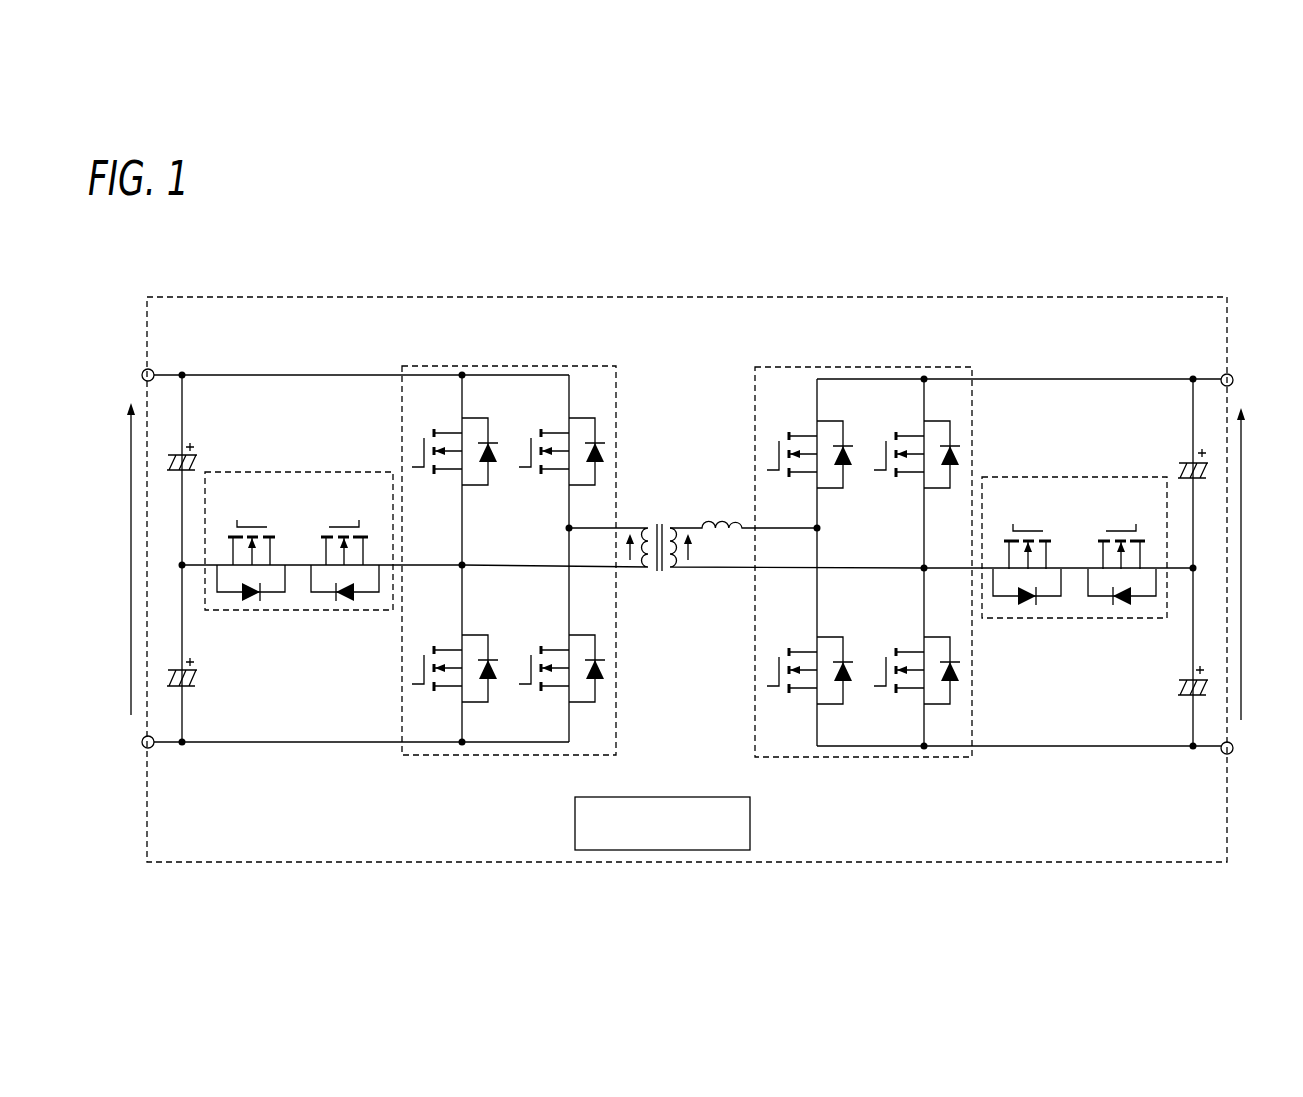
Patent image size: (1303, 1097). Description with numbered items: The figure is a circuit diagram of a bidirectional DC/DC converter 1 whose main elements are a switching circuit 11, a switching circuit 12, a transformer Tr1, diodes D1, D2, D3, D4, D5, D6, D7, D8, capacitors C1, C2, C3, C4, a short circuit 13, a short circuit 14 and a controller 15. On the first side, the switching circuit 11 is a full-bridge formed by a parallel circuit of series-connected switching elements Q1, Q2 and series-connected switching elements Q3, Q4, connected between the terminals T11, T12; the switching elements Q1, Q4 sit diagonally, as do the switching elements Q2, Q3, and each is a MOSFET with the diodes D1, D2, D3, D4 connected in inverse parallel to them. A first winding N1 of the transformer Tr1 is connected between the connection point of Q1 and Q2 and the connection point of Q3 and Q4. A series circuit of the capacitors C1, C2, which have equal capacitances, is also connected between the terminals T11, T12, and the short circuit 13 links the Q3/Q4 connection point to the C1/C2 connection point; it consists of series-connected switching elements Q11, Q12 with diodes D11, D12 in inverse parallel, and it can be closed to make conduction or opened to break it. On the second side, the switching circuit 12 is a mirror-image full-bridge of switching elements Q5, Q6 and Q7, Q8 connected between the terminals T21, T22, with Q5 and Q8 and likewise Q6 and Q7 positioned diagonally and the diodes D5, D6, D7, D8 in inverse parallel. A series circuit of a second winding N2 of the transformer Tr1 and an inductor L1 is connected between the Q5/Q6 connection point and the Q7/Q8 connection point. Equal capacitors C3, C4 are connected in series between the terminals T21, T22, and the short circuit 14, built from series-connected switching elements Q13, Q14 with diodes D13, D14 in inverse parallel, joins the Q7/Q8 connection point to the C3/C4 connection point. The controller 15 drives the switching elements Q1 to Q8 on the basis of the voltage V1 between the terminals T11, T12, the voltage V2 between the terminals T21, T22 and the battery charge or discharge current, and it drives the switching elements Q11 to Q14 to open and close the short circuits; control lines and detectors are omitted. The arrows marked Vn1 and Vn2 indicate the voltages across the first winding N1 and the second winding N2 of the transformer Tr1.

The bidirectional DC/DC converter 1 is at (200, 296).
The switching circuit 11 is at (493, 363).
The switching circuit 12 is at (868, 364).
The short circuit 13 is at (303, 470).
The short circuit 14 is at (1077, 475).
The controller 15 is at (752, 823).
The terminal T11 is at (329, 376).
The terminal T12 is at (329, 743).
The terminal T21 is at (1053, 380).
The terminal T22 is at (1053, 750).
The voltage V1 is at (119, 559).
The voltage V2 is at (1259, 564).
The capacitor C1 is at (190, 445).
The capacitor C2 is at (201, 679).
The capacitor C3 is at (1175, 457).
The capacitor C4 is at (1173, 686).
The switching element Q1 is at (544, 431).
The switching element Q2 is at (544, 647).
The switching element Q3 is at (437, 431).
The switching element Q4 is at (437, 647).
The switching element Q5 is at (792, 433).
The switching element Q6 is at (792, 648).
The switching element Q7 is at (899, 433).
The switching element Q8 is at (899, 648).
The switching element Q11 is at (255, 520).
The switching element Q12 is at (347, 520).
The switching element Q13 is at (1125, 525).
The switching element Q14 is at (1030, 525).
The diode D1 is at (600, 452).
The diode D2 is at (598, 668).
The diode D3 is at (490, 463).
The diode D4 is at (490, 678).
The diode D5 is at (847, 462).
The diode D6 is at (846, 680).
The diode D7 is at (960, 455).
The diode D8 is at (962, 677).
The diode D11 is at (248, 604).
The diode D12 is at (345, 604).
The diode D13 is at (1122, 608).
The diode D14 is at (1022, 608).
The transformer Tr1 is at (687, 547).
The first winding N1 is at (648, 556).
The second winding N2 is at (670, 558).
The inductor L1 is at (743, 503).
The voltage Vn1 is at (627, 551).
The voltage Vn2 is at (693, 553).